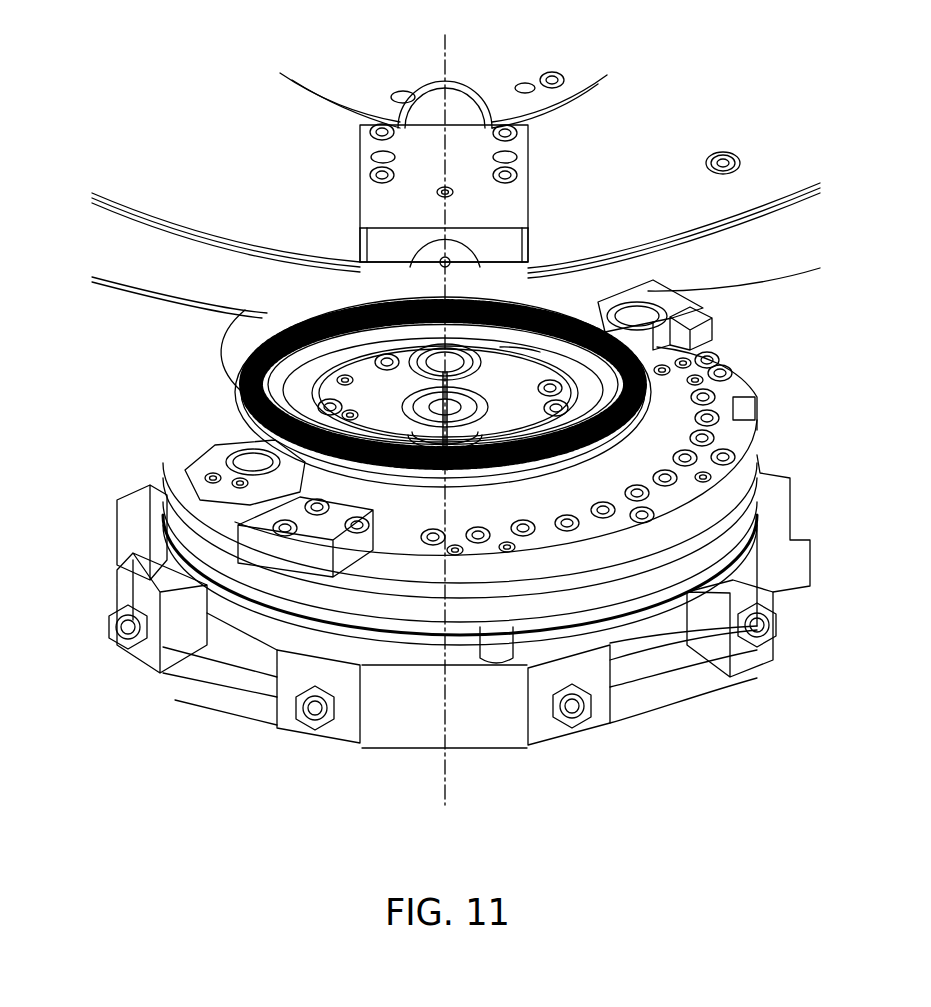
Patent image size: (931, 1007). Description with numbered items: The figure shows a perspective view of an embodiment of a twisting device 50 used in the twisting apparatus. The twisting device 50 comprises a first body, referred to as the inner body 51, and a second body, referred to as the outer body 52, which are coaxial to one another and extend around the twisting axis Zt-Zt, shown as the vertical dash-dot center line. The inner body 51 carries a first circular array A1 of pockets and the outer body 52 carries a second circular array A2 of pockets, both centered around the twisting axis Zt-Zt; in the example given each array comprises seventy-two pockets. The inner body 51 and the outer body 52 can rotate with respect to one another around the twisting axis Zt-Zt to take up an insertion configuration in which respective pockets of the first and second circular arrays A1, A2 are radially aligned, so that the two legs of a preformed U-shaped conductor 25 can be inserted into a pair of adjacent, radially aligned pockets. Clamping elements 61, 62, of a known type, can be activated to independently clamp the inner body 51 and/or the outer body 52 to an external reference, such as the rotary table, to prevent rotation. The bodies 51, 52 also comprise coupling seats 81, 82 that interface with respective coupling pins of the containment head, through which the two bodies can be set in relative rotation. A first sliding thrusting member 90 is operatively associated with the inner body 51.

The preformed U-shaped conductor 25 is at (425, 438).
The twisting device 50 is at (254, 211).
The inner body 51 is at (327, 367).
The outer body 52 is at (232, 430).
The clamping element 61 is at (523, 162).
The clamping element 62 is at (444, 245).
The coupling seat 81 is at (467, 357).
The coupling seat 82 is at (645, 330).
The first sliding thrusting member 90 is at (420, 406).
The first circular array of pockets A1 is at (550, 347).
The second circular array of pockets A2 is at (255, 358).
The twisting axis Zt is at (465, 415).